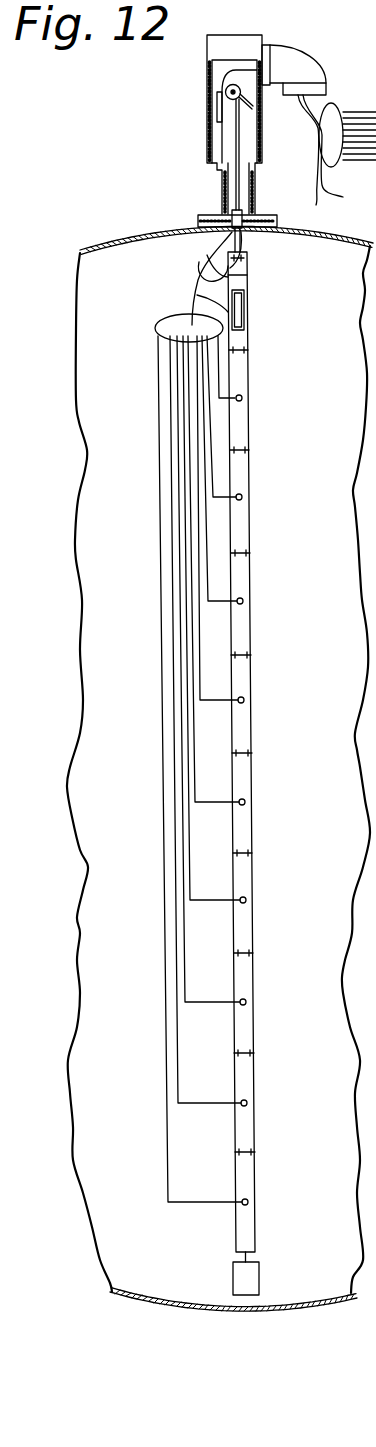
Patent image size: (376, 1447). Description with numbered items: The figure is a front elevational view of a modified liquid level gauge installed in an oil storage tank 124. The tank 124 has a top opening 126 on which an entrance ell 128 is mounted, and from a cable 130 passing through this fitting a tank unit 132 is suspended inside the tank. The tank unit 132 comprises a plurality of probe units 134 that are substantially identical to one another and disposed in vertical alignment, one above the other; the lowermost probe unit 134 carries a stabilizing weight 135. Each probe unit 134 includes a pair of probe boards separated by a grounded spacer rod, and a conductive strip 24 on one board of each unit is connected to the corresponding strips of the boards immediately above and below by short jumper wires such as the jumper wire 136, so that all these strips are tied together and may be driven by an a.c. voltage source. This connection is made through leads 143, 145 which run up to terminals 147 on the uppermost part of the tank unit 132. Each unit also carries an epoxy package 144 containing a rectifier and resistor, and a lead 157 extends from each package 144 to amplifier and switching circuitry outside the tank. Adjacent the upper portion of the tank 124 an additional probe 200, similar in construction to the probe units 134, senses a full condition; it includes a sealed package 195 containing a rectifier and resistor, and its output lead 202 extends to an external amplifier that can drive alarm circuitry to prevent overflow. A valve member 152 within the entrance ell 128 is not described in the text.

The conductive strip 24 is at (370, 221).
The tank 124 is at (152, 242).
The top opening 126 is at (250, 233).
The entrance ell 128 is at (212, 54).
The cable 130 is at (240, 147).
The tank unit 132 is at (268, 531).
The probe unit 134 is at (254, 375).
The stabilizing weight 135 is at (232, 1277).
The jumper wire 136 is at (347, 150).
The lead 143 is at (316, 190).
The epoxy package 144 is at (244, 399).
The lead 145 is at (183, 255).
The terminals 147 is at (249, 262).
The valve member 152 is at (215, 112).
The lead 157 is at (358, 104).
The sealed package 195 is at (241, 325).
The additional probe 200 is at (255, 311).
The output lead 202 is at (318, 178).